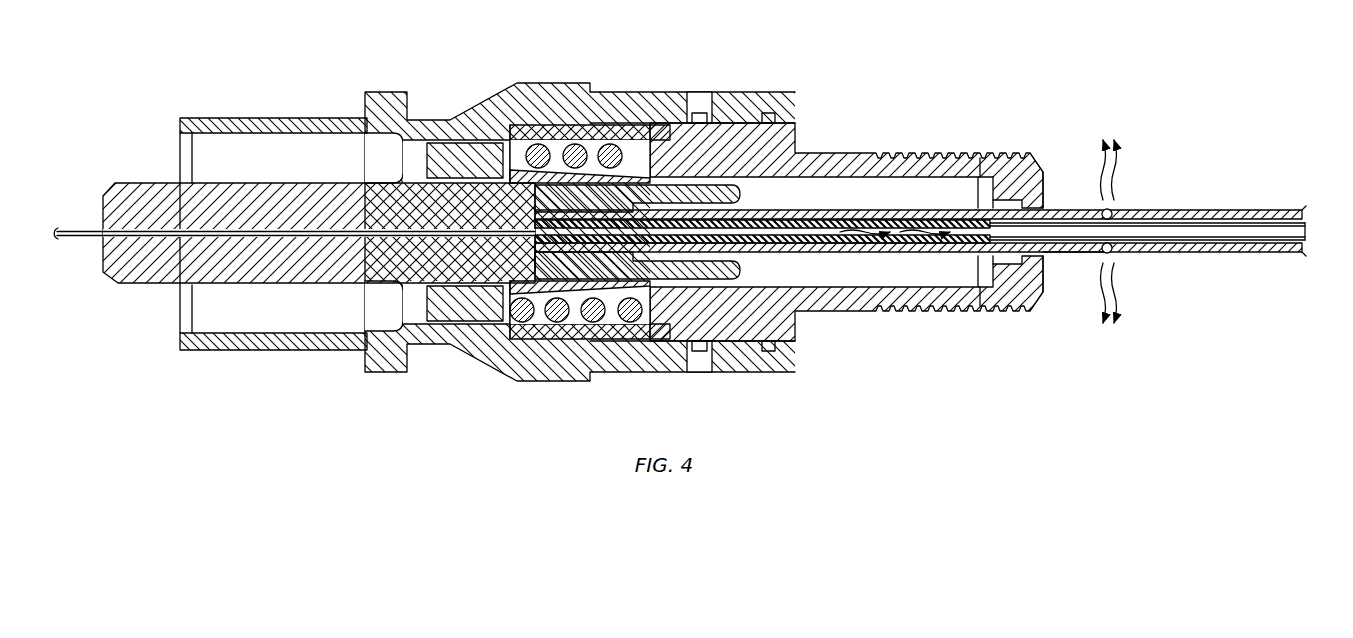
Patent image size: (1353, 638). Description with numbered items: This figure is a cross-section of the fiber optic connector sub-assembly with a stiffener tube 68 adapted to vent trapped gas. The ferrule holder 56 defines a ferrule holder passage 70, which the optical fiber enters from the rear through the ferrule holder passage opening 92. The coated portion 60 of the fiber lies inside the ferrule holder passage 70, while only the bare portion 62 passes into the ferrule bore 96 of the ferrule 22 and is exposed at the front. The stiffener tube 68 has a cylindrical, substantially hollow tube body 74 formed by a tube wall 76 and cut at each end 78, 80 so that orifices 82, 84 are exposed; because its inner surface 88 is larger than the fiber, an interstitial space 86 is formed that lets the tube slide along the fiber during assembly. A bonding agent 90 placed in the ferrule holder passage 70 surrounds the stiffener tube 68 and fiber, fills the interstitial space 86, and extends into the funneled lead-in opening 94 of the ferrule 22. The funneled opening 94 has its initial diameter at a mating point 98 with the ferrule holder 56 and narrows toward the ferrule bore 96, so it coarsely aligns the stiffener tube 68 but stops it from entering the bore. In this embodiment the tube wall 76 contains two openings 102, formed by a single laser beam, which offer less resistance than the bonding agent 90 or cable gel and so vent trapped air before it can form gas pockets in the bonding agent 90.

The ferrule 22 is at (147, 265).
The ferrule holder 56 is at (657, 90).
The coated portion 60 is at (1008, 232).
The bare portion 62 is at (73, 239).
The stiffener tube 68 is at (925, 255).
The ferrule holder passage 70 is at (703, 200).
The tube body 74 is at (1067, 262).
The tube wall 76 is at (1240, 254).
The end 78 is at (533, 246).
The end 80 is at (1291, 258).
The orifice 82 is at (540, 203).
The orifice 84 is at (1306, 232).
The interstitial space 86 is at (1171, 294).
The inner surface 88 is at (1245, 212).
The bonding agent 90 is at (778, 217).
The ferrule holder passage opening 92 is at (1047, 200).
The funneled lead-in opening 94 is at (523, 258).
The ferrule bore 96 is at (338, 238).
The mating point 98 is at (542, 202).
The openings 102 is at (1110, 210).